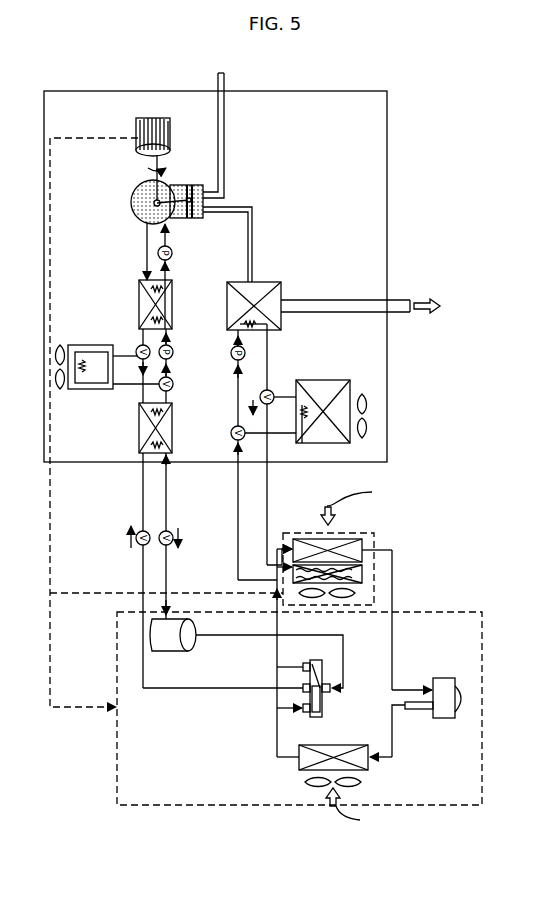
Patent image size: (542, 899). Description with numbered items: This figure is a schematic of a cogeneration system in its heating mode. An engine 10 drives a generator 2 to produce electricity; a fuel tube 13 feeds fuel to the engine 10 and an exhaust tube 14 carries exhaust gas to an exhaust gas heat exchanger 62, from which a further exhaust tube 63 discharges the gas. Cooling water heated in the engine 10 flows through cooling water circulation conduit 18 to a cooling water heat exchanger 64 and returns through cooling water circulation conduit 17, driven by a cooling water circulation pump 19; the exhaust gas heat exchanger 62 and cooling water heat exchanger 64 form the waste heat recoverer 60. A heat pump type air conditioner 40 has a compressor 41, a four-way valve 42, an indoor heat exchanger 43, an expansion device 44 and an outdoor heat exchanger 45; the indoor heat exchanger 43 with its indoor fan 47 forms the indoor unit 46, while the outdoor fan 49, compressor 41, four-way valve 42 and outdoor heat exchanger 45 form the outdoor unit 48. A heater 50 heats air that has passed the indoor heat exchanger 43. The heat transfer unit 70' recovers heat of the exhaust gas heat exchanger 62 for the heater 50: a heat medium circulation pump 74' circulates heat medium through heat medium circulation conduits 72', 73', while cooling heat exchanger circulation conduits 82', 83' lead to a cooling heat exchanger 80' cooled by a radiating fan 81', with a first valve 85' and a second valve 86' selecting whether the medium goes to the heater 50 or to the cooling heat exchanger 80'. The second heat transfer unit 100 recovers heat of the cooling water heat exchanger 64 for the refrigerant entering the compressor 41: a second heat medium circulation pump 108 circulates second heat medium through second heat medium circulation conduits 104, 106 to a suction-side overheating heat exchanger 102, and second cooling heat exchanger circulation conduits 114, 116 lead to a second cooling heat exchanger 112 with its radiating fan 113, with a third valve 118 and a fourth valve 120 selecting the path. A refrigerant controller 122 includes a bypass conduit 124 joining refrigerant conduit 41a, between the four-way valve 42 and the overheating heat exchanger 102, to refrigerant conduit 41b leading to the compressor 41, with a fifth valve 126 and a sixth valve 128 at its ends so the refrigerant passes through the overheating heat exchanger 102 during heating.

The generator 2 is at (170, 133).
The engine 10 is at (137, 195).
The fuel tube 13 is at (224, 128).
The exhaust tube 14 is at (253, 243).
The cooling water circulation conduit 17 is at (147, 273).
The cooling water circulation conduit 18 is at (147, 248).
The cooling water circulation pump 19 is at (172, 252).
The waste heat recoverer 60 is at (338, 251).
The exhaust gas heat exchanger 62 is at (280, 321).
The exhaust tube 63 is at (353, 298).
The cooling water heat exchanger 64 is at (139, 292).
The heat medium circulation pump 74' is at (240, 453).
The cooling heat exchanger 80' is at (360, 401).
The radiating fan 81' is at (392, 419).
The cooling heat exchanger circulation conduit 82' is at (292, 374).
The cooling heat exchanger circulation conduit 83' is at (282, 501).
The first valve 85' is at (273, 444).
The second valve 86' is at (239, 438).
The heat transfer unit 70' is at (394, 470).
The heat medium circulation conduit 72' is at (237, 495).
The heat medium circulation conduit 73' is at (223, 546).
The second heat transfer unit 100 is at (129, 456).
The suction-side overheating heat exchanger 102 is at (139, 432).
The second heat medium circulation conduit 104 is at (138, 388).
The second heat medium circulation conduit 106 is at (172, 410).
The second heat medium circulation pump 108 is at (172, 345).
The second cooling heat exchanger 112 is at (80, 389).
The radiating fan 113 is at (57, 360).
The second cooling heat exchanger circulation conduit 114 is at (137, 347).
The second cooling heat exchanger circulation conduit 116 is at (108, 389).
The third valve 118 is at (142, 341).
The fourth valve 120 is at (173, 384).
The refrigerant controller 122 is at (137, 565).
The bypass conduit 124 is at (163, 546).
The fifth valve 126 is at (137, 548).
The sixth valve 128 is at (172, 550).
The heat pump type air conditioner 40 is at (462, 600).
The compressor 41 is at (175, 650).
The refrigerant conduit 41a is at (140, 505).
The refrigerant conduit 41b is at (168, 492).
The 4-way valve 42 is at (322, 700).
The indoor heat exchanger 43 is at (360, 530).
The expansion device 44 is at (465, 700).
The outdoor heat exchanger 45 is at (368, 762).
The indoor unit 46 is at (380, 537).
The indoor fan 47 is at (358, 592).
The outdoor unit 48 is at (113, 768).
The outdoor fan 49 is at (305, 780).
The heater 50 is at (362, 572).